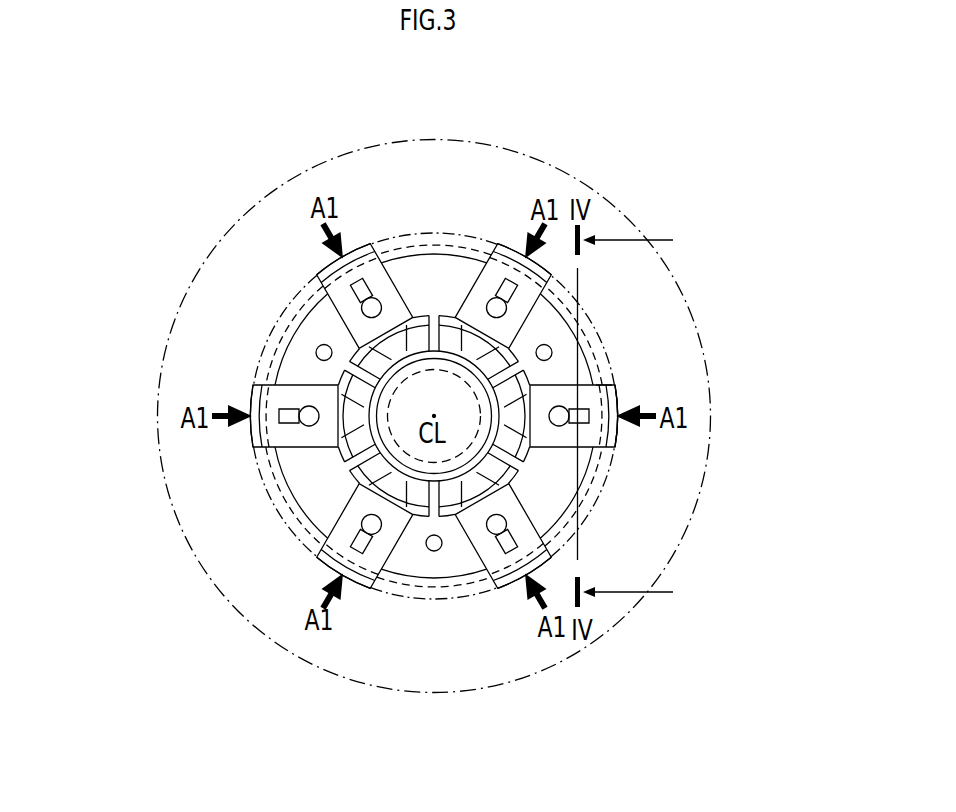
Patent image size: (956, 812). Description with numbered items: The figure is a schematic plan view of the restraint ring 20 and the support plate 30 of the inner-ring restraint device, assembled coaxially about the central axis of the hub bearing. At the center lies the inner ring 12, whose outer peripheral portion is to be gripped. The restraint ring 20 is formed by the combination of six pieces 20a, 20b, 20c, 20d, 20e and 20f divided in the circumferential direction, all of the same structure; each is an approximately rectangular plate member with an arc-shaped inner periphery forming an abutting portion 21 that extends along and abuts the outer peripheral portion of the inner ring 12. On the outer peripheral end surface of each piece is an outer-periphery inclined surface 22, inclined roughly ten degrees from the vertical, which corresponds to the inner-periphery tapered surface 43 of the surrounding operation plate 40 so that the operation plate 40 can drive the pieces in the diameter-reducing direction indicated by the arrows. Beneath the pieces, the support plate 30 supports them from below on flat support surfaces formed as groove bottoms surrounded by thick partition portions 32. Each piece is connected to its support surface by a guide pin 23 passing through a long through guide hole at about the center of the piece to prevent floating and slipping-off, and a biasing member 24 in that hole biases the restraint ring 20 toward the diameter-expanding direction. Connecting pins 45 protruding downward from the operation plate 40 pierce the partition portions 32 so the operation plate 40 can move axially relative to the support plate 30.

The inner ring 12 is at (434, 416).
The restraint ring 20 is at (435, 419).
The piece 20a is at (597, 353).
The piece 20b is at (497, 583).
The piece 20c is at (224, 589).
The piece 20d is at (250, 390).
The piece 20e is at (364, 270).
The piece 20f is at (491, 275).
The abutting portion 21 is at (412, 325).
The outer-periphery inclined surface 22 is at (318, 270).
The guide pin 23 is at (612, 380).
The biasing member 24 is at (613, 407).
The support plate 30 is at (274, 472).
The partition portion 32 is at (448, 268).
The operation plate 40 is at (222, 227).
The inner-periphery tapered surface 43 is at (607, 478).
The connecting pin 45 is at (313, 353).